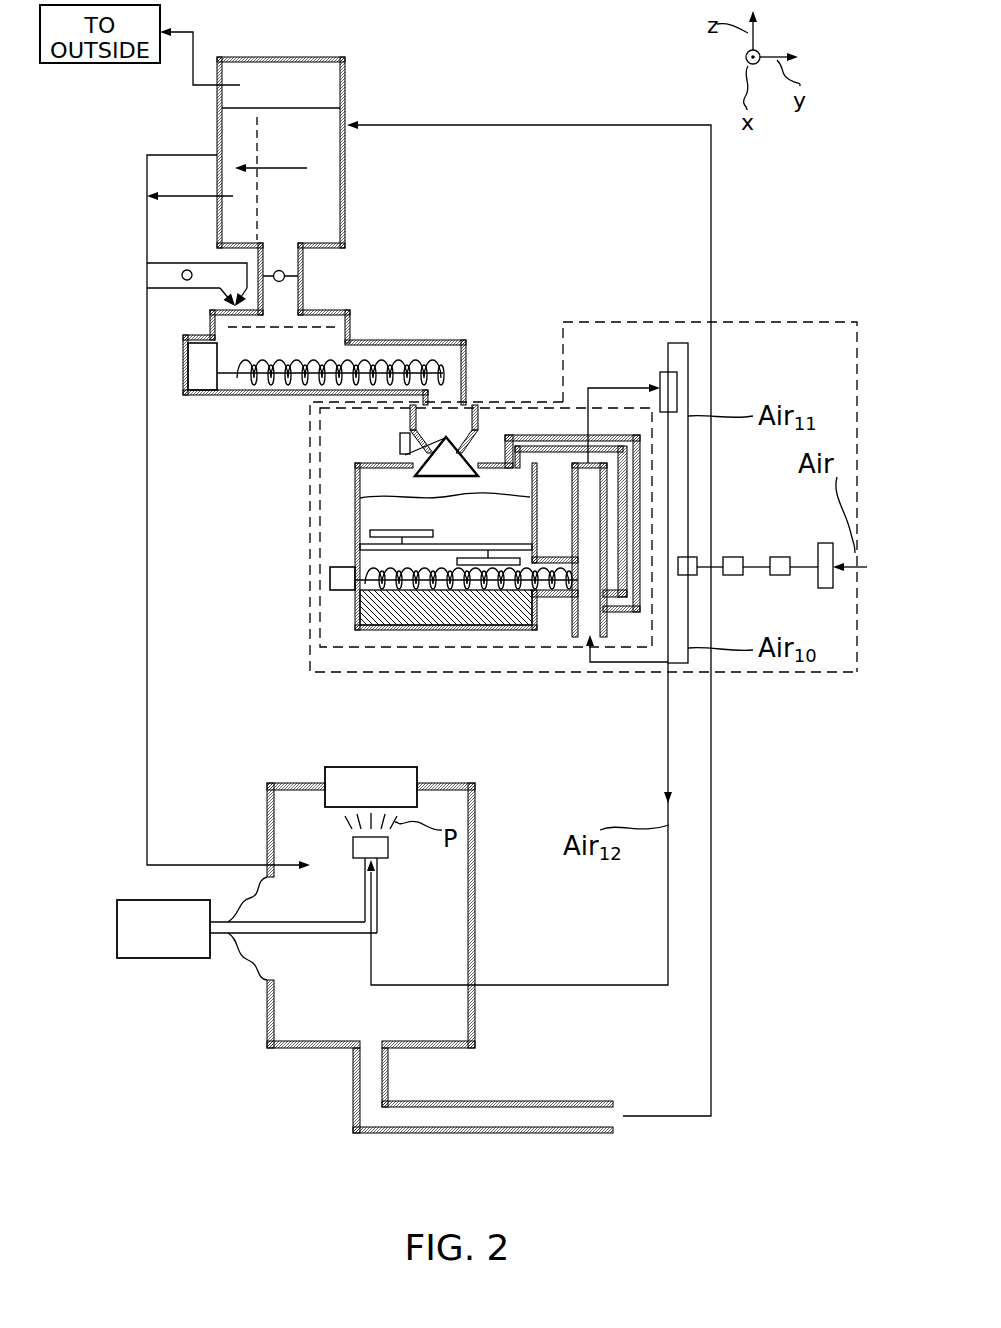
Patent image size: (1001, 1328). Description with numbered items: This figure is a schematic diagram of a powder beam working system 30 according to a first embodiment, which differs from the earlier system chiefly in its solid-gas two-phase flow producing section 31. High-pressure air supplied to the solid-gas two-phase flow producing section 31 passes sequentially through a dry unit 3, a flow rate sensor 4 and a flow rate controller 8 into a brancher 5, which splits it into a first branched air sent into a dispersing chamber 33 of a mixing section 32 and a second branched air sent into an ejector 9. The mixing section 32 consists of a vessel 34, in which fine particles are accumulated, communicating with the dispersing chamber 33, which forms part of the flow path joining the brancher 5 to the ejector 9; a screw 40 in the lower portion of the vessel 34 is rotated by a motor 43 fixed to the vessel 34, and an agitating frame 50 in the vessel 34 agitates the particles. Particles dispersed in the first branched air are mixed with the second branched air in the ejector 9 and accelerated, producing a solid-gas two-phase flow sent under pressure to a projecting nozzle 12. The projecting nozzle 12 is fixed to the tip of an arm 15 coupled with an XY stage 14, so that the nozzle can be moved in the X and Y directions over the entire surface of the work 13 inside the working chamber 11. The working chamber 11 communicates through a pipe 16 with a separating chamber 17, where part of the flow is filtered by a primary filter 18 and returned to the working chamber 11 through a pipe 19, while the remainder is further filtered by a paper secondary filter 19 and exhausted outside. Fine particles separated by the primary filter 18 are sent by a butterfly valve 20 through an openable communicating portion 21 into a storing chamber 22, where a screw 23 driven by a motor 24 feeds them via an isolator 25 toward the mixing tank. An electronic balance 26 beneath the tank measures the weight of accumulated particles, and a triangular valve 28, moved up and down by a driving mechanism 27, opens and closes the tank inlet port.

The dry unit 3 is at (827, 590).
The flow rate sensor 4 is at (778, 557).
The brancher 5 is at (692, 557).
The flow rate controller 8 is at (730, 557).
The ejector 9 is at (663, 377).
The working chamber 11 is at (475, 835).
The projecting nozzle 12 is at (388, 847).
The work 13 is at (327, 780).
The XY stage 14 is at (195, 947).
The arm 15 is at (313, 937).
The pipe 16 is at (508, 1100).
The separating chamber 17 is at (217, 130).
The primary filter 18 is at (257, 132).
The pipe 19 is at (287, 68).
The butterfly valve 20 is at (283, 268).
The communicating portion 21 is at (290, 300).
The storing chamber 22 is at (327, 338).
The screw 23 is at (277, 373).
The motor 24 is at (182, 360).
The isolator 25 is at (475, 425).
The electronic balance 26 is at (510, 620).
The driving mechanism 27 is at (400, 430).
The triangular valve 28 is at (468, 452).
The powder beam working system 30 is at (785, 1140).
The solid-gas two-phase flow producing section 31 is at (777, 318).
The mixing section 32 is at (308, 448).
The dispersing chamber 33 is at (605, 622).
The vessel 34 is at (368, 483).
The screw 40 is at (357, 620).
The motor 43 is at (337, 580).
The agitating frame 50 is at (510, 533).